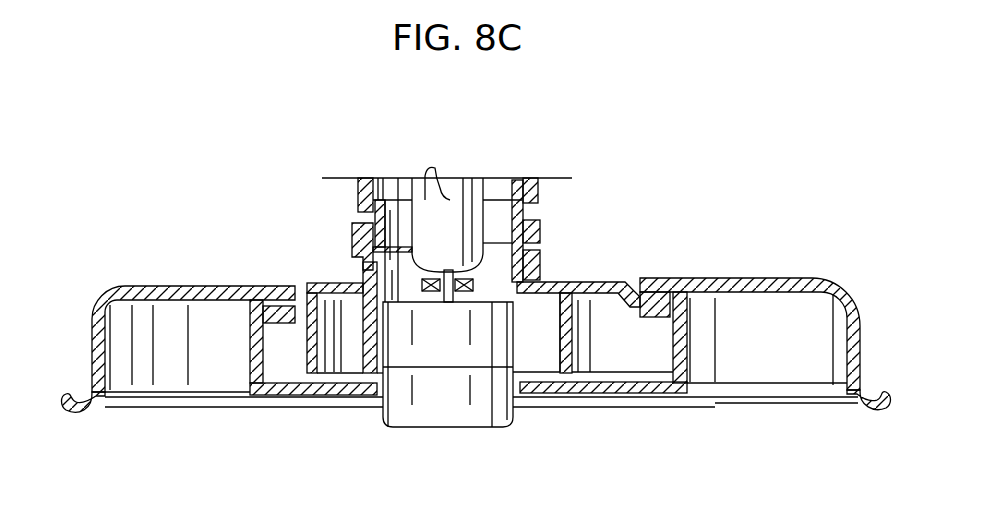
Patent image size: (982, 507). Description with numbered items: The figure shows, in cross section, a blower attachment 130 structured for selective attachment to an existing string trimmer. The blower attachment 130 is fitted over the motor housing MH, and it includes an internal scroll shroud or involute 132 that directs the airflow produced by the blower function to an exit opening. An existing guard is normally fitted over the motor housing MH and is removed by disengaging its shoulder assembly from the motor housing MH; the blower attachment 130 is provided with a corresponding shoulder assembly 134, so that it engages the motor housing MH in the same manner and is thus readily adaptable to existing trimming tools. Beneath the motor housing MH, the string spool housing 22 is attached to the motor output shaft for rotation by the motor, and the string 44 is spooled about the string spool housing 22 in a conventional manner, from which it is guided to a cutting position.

The blower attachment 130 is at (113, 256).
The internal scroll shroud 132 is at (172, 368).
The shoulder assembly 134 is at (355, 235).
The motor housing MH is at (534, 197).
The string spool housing 22 is at (438, 400).
The string 44 is at (602, 408).